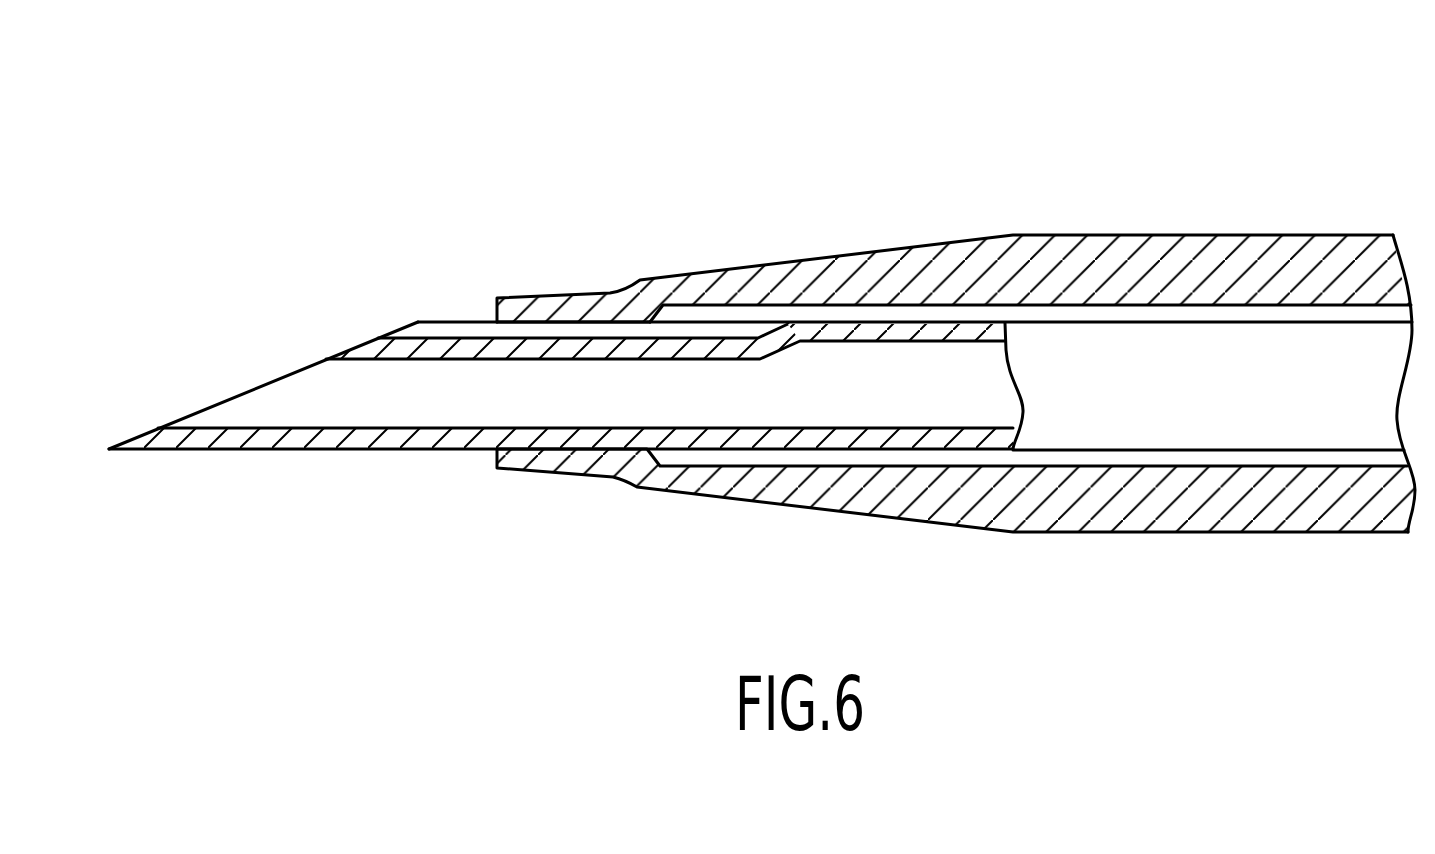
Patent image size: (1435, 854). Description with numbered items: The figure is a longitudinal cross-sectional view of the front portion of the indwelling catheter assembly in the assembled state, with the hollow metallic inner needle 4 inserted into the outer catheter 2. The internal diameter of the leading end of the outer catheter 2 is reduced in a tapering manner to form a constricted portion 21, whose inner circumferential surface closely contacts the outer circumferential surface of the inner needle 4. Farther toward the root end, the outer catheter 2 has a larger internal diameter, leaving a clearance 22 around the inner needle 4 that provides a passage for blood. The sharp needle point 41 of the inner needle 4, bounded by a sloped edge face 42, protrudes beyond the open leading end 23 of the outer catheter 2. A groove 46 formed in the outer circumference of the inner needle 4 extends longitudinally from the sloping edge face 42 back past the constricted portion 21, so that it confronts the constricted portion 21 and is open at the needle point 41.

The outer catheter 2 is at (1037, 523).
The inner needle 4 is at (1208, 419).
The constricted portion 21 is at (580, 460).
The clearance 22 is at (1107, 313).
The leading end 23 is at (490, 318).
The needle point 41 is at (215, 435).
The edge face 42 is at (210, 407).
The groove 46 is at (585, 332).